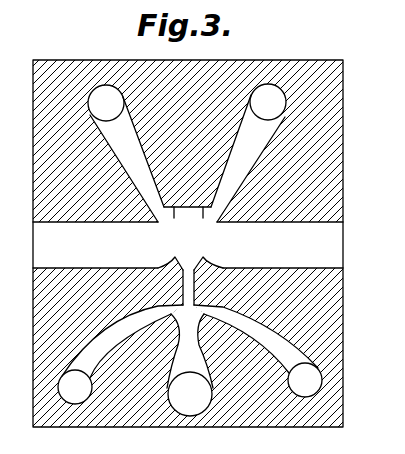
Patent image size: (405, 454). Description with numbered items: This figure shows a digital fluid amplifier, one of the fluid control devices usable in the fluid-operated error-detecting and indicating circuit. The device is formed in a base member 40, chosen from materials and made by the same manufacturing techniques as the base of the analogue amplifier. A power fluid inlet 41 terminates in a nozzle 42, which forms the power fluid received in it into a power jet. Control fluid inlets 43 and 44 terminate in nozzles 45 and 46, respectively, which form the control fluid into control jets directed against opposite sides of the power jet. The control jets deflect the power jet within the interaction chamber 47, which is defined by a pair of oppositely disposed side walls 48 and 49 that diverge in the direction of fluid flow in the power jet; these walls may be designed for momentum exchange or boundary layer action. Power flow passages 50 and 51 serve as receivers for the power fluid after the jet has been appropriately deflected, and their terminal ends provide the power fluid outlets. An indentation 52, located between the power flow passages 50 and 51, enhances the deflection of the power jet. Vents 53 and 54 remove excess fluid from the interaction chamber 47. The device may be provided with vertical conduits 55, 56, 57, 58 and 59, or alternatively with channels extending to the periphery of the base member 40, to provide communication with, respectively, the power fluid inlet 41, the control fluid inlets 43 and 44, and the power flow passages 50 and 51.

The base member 40 is at (318, 60).
The power fluid inlet 41 is at (204, 371).
The nozzle 42 is at (188, 340).
The control fluid inlet 43 is at (95, 367).
The control fluid inlet 44 is at (281, 361).
The nozzle 45 is at (160, 305).
The nozzle 46 is at (214, 313).
The interaction chamber 47 is at (192, 253).
The side wall 48 is at (178, 281).
The side wall 49 is at (198, 273).
The power flow passage 50 is at (213, 200).
The power flow passage 51 is at (161, 199).
The indentation 52 is at (187, 219).
The vent 53 is at (43, 239).
The vent 54 is at (337, 233).
The vertical conduit 55 is at (199, 402).
The vertical conduit 56 is at (72, 396).
The vertical conduit 57 is at (312, 380).
The vertical conduit 58 is at (263, 97).
The vertical conduit 59 is at (105, 92).